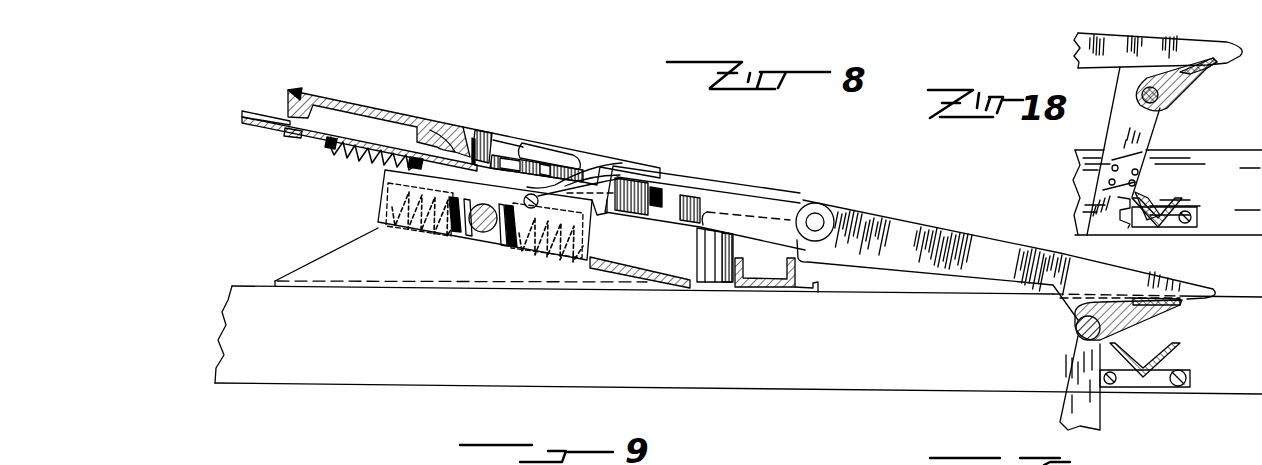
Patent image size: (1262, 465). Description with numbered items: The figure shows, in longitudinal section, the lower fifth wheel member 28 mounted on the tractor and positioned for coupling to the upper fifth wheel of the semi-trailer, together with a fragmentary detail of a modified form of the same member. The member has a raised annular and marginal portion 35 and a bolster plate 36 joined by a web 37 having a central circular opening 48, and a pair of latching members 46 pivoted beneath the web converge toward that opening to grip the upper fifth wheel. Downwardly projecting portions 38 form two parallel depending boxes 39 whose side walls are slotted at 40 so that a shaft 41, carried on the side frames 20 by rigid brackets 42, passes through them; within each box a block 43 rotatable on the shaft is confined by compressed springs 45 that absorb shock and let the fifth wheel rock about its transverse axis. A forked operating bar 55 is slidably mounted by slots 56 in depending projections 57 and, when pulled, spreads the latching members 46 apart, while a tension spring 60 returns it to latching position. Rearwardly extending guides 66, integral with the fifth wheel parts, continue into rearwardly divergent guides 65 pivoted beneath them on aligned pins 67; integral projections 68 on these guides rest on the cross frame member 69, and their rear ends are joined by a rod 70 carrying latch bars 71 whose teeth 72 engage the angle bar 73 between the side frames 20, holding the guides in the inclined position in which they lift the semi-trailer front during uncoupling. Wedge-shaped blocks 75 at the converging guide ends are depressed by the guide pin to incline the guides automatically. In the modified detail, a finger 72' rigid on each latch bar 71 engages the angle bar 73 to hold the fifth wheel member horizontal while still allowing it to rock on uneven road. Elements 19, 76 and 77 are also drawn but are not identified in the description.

In FIG. 8, the pin 19 is at (524, 196).
In FIG. 8, the side frames 20 is at (790, 352).
In FIG. 18, the side frames 20 is at (1213, 168).
In FIG. 8, the lower fifth wheel member 28 is at (548, 142).
In FIG. 8, the raised annular and marginal portion 35 is at (298, 90).
In FIG. 8, the bolster plate 36 is at (458, 128).
In FIG. 8, the web 37 is at (382, 112).
In FIG. 8, the downwardly projecting portions 38 is at (386, 194).
In FIG. 8, the depending boxes 39 is at (532, 244).
In FIG. 8, the slots 40 is at (462, 237).
In FIG. 8, the shaft 41 is at (482, 233).
In FIG. 8, the brackets 42 is at (370, 252).
In FIG. 8, the block 43 is at (470, 203).
In FIG. 8, the compressed springs 45 is at (416, 232).
In FIG. 8, the latching members 46 is at (576, 162).
In FIG. 8, the circular opening 48 is at (490, 140).
In FIG. 8, the forked operating bar 55 is at (316, 138).
In FIG. 8, the slots 56 is at (290, 120).
In FIG. 8, the depending projections 57 is at (288, 138).
In FIG. 8, the tension spring 60 is at (372, 156).
In FIG. 8, the rearwardly divergent guides 65 is at (932, 228).
In FIG. 18, the rearwardly divergent guides 65 is at (1093, 47).
In FIG. 8, the rearwardly extending guides 66 is at (690, 176).
In FIG. 8, the pins 67 is at (820, 218).
In FIG. 8, the downwardly extending integral projections 68 is at (702, 246).
In FIG. 8, the cross frame member 69 is at (762, 292).
In FIG. 8, the rod 70 is at (1074, 329).
In FIG. 18, the rod 70 is at (1138, 95).
In FIG. 8, the latch bars 71 is at (1062, 364).
In FIG. 18, the latch bars 71 is at (1137, 123).
In FIG. 18, the teeth 72 is at (1102, 210).
In FIG. 18, the finger 72' is at (1150, 159).
In FIG. 8, the angle bar 73 is at (1165, 352).
In FIG. 18, the angle bar 73 is at (1177, 198).
In FIG. 8, the wedge-shaped blocks 75 is at (605, 212).
In FIG. 8, the pad 76 is at (1160, 303).
In FIG. 18, the pad 76 is at (1195, 75).
In FIG. 8, the plate 77 is at (1120, 307).